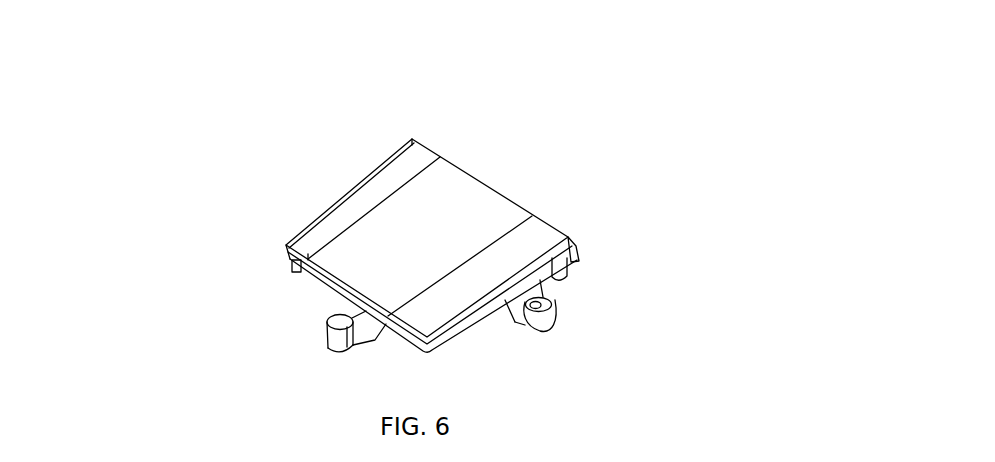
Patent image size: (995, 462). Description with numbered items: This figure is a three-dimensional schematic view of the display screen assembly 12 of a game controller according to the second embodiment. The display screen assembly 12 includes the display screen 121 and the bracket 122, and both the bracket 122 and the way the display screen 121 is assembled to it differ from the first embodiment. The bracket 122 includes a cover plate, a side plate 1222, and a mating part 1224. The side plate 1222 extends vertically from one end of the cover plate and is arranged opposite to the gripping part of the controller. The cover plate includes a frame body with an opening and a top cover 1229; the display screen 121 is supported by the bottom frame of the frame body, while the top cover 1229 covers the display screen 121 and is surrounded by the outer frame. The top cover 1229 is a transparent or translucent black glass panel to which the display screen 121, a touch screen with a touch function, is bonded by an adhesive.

The display screen assembly 12 is at (513, 157).
The display screen 121 is at (372, 237).
The bracket 122 is at (286, 245).
The side plate 1222 is at (578, 250).
The mating part 1224 is at (330, 334).
The top cover 1229 is at (412, 153).